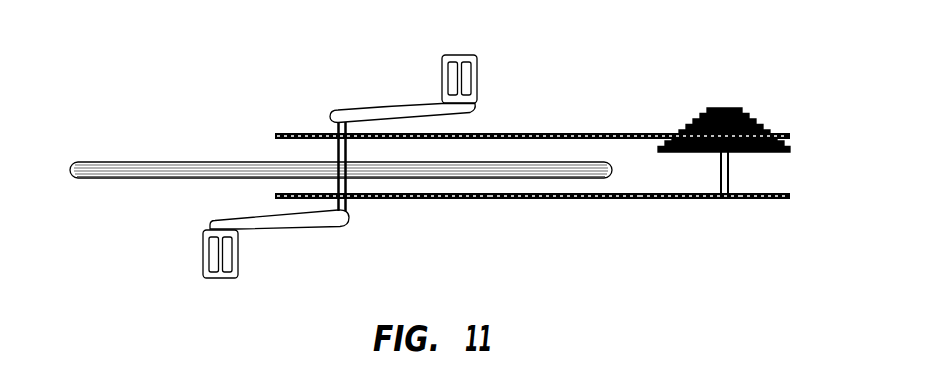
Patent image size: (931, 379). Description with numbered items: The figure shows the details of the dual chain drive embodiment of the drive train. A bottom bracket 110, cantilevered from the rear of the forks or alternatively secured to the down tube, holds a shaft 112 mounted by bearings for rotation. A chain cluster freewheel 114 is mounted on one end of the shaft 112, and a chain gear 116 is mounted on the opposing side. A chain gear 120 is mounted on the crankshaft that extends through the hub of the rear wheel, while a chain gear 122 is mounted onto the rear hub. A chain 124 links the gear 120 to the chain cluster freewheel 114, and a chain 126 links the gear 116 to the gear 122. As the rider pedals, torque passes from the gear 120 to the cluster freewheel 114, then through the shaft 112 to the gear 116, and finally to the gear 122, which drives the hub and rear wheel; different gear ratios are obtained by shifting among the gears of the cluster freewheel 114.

The bottom bracket 110 is at (767, 200).
The shaft 112 is at (772, 137).
The chain cluster freewheel 114 is at (745, 113).
The chain gear 116 is at (703, 200).
The chain gear 120 is at (282, 133).
The chain gear 122 is at (423, 200).
The chain 124 is at (588, 132).
The chain 126 is at (555, 200).